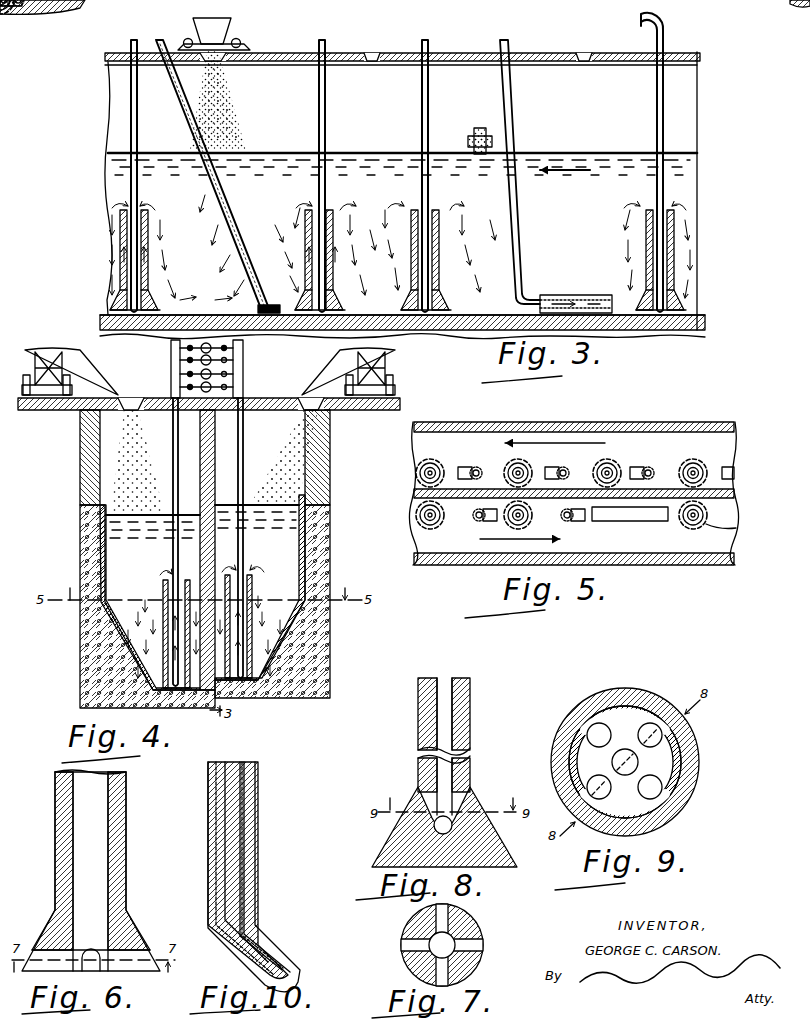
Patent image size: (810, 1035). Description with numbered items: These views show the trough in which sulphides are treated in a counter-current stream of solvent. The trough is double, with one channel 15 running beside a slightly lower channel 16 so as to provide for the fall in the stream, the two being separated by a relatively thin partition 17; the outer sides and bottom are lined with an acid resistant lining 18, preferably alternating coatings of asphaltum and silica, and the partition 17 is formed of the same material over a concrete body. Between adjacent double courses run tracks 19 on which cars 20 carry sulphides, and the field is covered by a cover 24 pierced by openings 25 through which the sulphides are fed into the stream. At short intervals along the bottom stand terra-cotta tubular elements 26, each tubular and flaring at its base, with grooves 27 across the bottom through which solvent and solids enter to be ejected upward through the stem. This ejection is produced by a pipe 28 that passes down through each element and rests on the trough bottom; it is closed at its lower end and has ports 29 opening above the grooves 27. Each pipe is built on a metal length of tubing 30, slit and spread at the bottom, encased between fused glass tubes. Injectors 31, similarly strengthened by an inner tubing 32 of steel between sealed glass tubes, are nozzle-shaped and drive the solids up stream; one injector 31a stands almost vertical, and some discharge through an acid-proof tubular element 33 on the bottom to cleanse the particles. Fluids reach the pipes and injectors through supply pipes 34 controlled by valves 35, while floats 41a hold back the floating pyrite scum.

In FIG. 4, the channel 15 is at (331, 560).
In FIG. 4, the channel 16 is at (128, 565).
In FIG. 4, the partition 17 is at (200, 441).
In FIG. 5, the partition 17 is at (655, 489).
In FIG. 4, the acid resistant lining 18 is at (106, 549).
In FIG. 3, the tracks 19 is at (247, 47).
In FIG. 4, the tracks 19 is at (396, 389).
In FIG. 3, the cars 20 is at (218, 28).
In FIG. 4, the cars 20 is at (80, 362).
In FIG. 3, the cover 24 is at (350, 58).
In FIG. 4, the cover 24 is at (58, 410).
In FIG. 3, the openings 25 is at (218, 62).
In FIG. 4, the openings 25 is at (134, 398).
In FIG. 3, the tubular elements 26 is at (340, 216).
In FIG. 4, the tubular elements 26 is at (163, 592).
In FIG. 5, the tubular elements 26 is at (436, 524).
In FIG. 6, the tubular elements 26 is at (127, 875).
In FIG. 7, the tubular elements 26 is at (470, 925).
In FIG. 6, the grooves 27 is at (100, 956).
In FIG. 7, the grooves 27 is at (477, 945).
In FIG. 3, the pipe 28 is at (138, 130).
In FIG. 4, the pipe 28 is at (173, 555).
In FIG. 5, the pipe 28 is at (440, 467).
In FIG. 8, the pipe 28 is at (470, 776).
In FIG. 9, the pipe 28 is at (700, 760).
In FIG. 8, the ports 29 is at (420, 803).
In FIG. 9, the ports 29 is at (655, 744).
In FIG. 8, the length of tubing 30 is at (462, 727).
In FIG. 9, the length of tubing 30 is at (640, 690).
In FIG. 3, the injectors 31 is at (178, 102).
In FIG. 5, the injectors 31 is at (478, 468).
In FIG. 10, the injectors 31 is at (207, 797).
In FIG. 3, the injector 31a is at (514, 118).
In FIG. 10, the inner tubing 32 is at (250, 766).
In FIG. 3, the acid-proof tubular element 33 is at (592, 296).
In FIG. 5, the acid-proof tubular element 33 is at (627, 521).
In FIG. 4, the pipes 34 is at (243, 357).
In FIG. 4, the valves 35 is at (184, 360).
In FIG. 3, the floats 41a is at (481, 130).